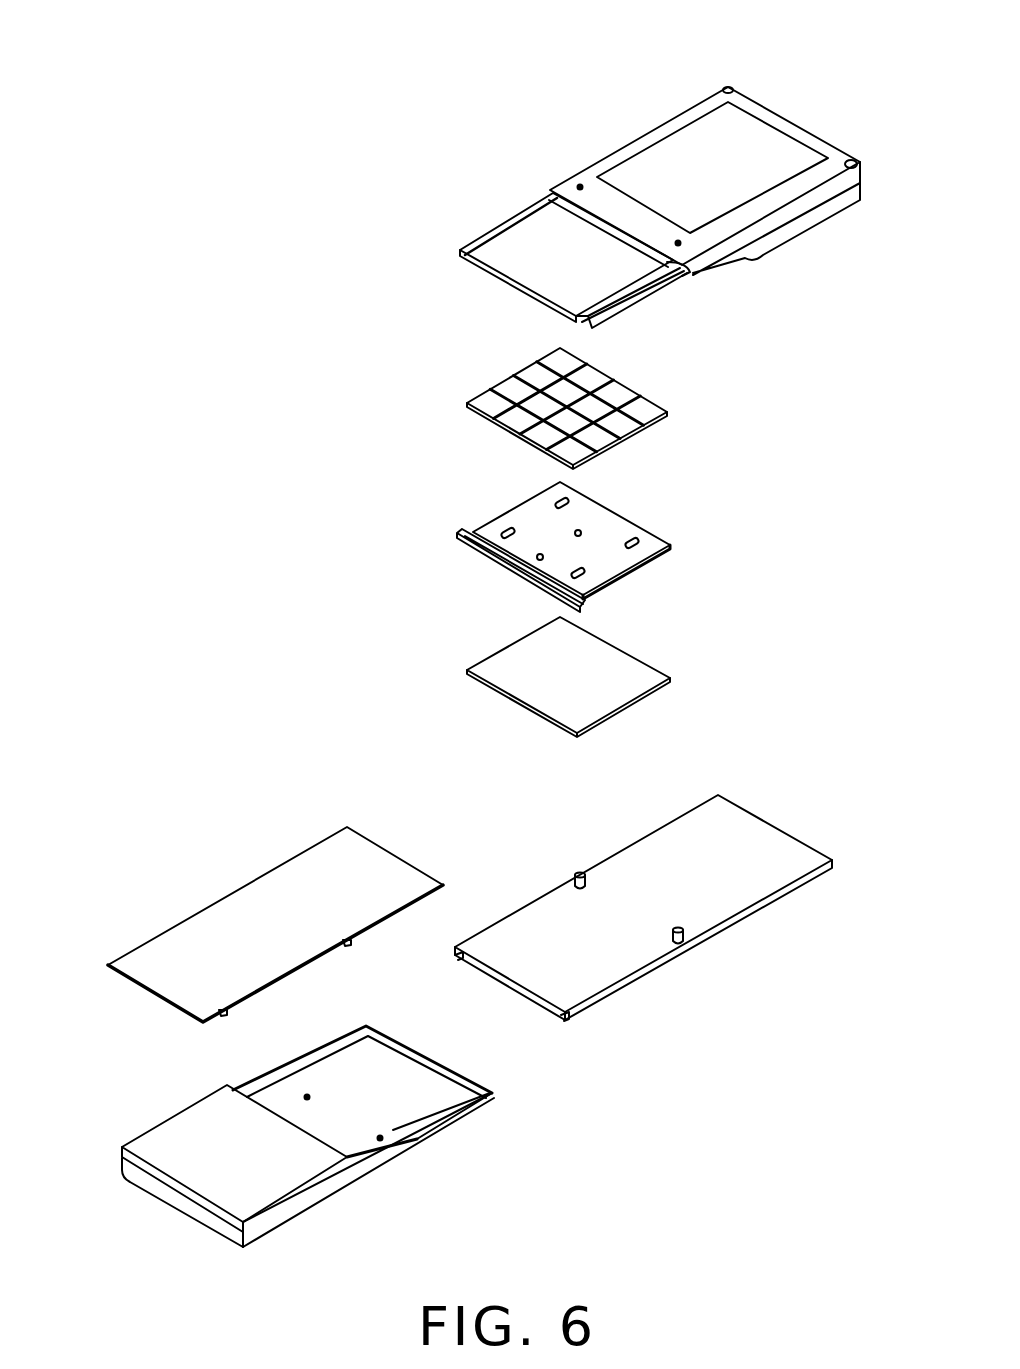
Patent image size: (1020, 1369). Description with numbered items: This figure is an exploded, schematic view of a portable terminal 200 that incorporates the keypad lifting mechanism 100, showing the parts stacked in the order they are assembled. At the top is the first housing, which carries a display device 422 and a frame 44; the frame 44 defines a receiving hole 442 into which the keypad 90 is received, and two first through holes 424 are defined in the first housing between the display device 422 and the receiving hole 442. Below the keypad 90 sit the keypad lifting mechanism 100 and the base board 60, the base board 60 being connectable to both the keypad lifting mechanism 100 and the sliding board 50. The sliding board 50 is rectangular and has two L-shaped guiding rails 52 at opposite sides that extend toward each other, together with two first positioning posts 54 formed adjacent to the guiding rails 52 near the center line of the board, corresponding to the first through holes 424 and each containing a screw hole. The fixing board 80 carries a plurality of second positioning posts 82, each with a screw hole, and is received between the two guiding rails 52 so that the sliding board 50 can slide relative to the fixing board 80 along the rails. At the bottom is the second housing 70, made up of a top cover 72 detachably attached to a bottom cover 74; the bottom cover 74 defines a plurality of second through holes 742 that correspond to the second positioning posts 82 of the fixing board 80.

The portable terminal 200 is at (307, 66).
The display device 422 is at (663, 150).
The first through holes 424 is at (580, 187).
The receiving hole 442 is at (513, 243).
The frame 44 is at (633, 285).
The keypad 90 is at (650, 410).
The keypad lifting mechanism 100 is at (623, 532).
The base board 60 is at (627, 672).
The fixing board 80 is at (277, 893).
The second positioning posts 82 is at (225, 1017).
The sliding board 50 is at (775, 838).
The guiding rails 52 is at (565, 1020).
The first positioning posts 54 is at (678, 950).
The second housing 70 is at (261, 1137).
The top cover 72 is at (163, 1140).
The bottom cover 74 is at (415, 1110).
The second through holes 742 is at (307, 1097).